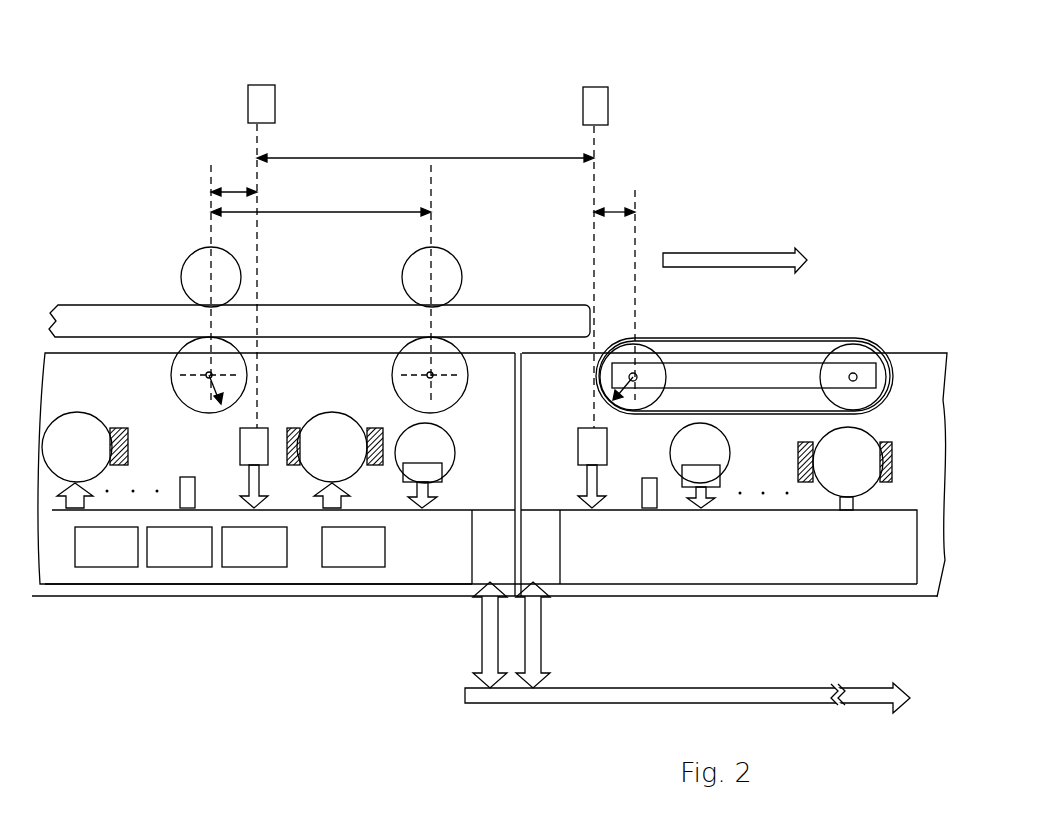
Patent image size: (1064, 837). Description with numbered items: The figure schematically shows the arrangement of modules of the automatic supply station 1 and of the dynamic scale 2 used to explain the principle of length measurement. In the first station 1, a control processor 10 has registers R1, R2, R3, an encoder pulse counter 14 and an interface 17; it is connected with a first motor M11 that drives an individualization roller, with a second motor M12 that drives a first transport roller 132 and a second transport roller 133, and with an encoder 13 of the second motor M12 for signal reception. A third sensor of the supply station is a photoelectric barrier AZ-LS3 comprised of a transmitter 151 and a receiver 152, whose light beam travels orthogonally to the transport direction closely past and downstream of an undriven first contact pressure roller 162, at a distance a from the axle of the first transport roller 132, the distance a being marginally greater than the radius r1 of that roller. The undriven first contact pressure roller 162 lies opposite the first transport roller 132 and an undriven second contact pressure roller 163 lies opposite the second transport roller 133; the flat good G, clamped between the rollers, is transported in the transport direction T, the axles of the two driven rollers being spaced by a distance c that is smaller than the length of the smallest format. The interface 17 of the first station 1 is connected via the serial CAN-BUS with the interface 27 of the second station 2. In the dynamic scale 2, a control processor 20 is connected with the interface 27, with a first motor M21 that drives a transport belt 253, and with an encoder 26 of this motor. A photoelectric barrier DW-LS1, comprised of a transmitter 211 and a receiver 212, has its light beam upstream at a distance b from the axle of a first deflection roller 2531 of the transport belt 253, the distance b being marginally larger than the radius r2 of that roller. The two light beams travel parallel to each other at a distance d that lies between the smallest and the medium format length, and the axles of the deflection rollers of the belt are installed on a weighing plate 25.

The automatic supply station 1 is at (259, 603).
The dynamic scale 2 is at (673, 605).
The control processor 10 is at (283, 595).
The control processor 20 is at (857, 567).
The encoder 13 is at (407, 472).
The encoder pulse counter 14 is at (363, 562).
The interface 17 is at (478, 570).
The interface 27 is at (548, 570).
The weighing plate 25 is at (717, 348).
The encoder 26 is at (717, 478).
The first transport roller 132 is at (185, 363).
The second transport roller 133 is at (402, 372).
The transmitter 151 is at (260, 455).
The receiver 152 is at (258, 110).
The first contact pressure roller 162 is at (193, 275).
The second contact pressure roller 163 is at (440, 282).
The transmitter 211 is at (598, 455).
The receiver 212 is at (593, 110).
The transport belt 253 is at (733, 337).
The first deflection roller 2531 is at (658, 392).
The register R1 is at (107, 562).
The register R2 is at (185, 562).
The register R3 is at (252, 563).
The first motor M11 is at (73, 465).
The second motor M12 is at (318, 464).
The first motor M21 is at (833, 468).
The flat good G is at (299, 313).
The transport direction T is at (735, 249).
The distance a is at (234, 177).
The distance b is at (614, 199).
The distance c is at (321, 198).
The distance d is at (425, 145).
The radius r1 is at (236, 383).
The radius r2 is at (600, 377).
The photoelectric barrier AZ-LS3 is at (290, 103).
The photoelectric barrier DW-LS1 is at (626, 105).
The CAN bus CAN-BUS is at (487, 698).